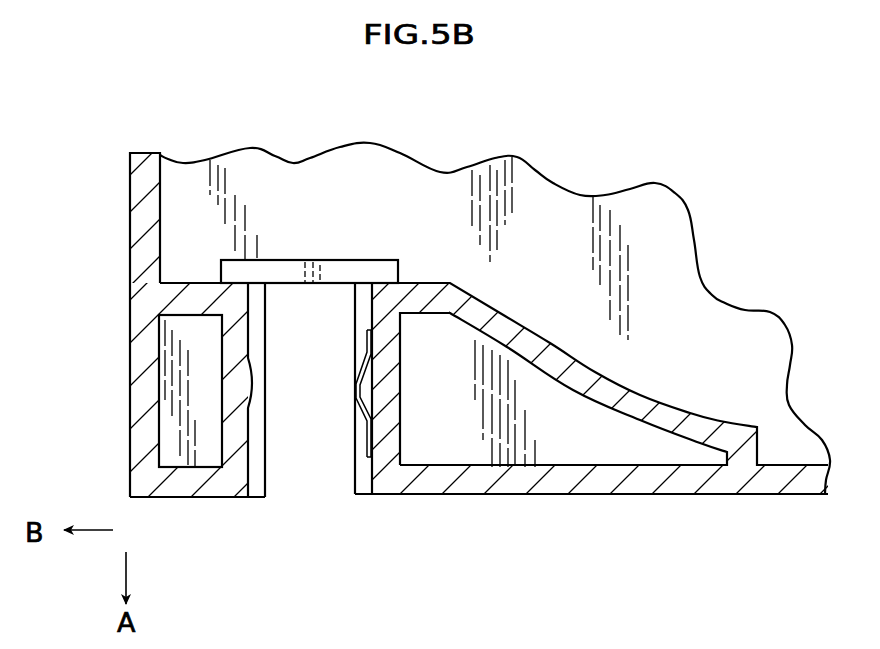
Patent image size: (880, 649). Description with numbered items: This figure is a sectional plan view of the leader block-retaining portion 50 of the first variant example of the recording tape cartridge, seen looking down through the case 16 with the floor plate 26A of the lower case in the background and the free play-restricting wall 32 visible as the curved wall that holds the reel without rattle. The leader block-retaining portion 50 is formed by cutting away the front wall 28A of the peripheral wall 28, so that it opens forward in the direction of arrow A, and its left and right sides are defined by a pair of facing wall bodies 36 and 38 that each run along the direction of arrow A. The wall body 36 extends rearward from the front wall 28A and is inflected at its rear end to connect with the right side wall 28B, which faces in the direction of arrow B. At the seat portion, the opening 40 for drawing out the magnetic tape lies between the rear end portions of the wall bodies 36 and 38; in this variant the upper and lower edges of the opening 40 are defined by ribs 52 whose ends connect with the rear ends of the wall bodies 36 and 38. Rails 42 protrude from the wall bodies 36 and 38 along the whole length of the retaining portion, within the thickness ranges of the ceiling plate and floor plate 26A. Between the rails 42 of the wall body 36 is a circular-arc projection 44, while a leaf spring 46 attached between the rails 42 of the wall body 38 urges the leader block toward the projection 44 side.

The case 16 is at (647, 502).
The floor plate 26A is at (497, 162).
The peripheral wall 28 is at (430, 355).
The front wall 28A is at (189, 480).
The right side wall 28B is at (137, 280).
The free play-restricting wall 32 is at (548, 368).
The wall body 36 is at (222, 343).
The wall body 38 is at (395, 387).
The opening 40 is at (334, 290).
The rail 42 is at (258, 480).
The projection 44 is at (250, 379).
The leaf spring 46 is at (352, 386).
The leader block-retaining portion 50 is at (311, 456).
The rib 52 is at (290, 272).